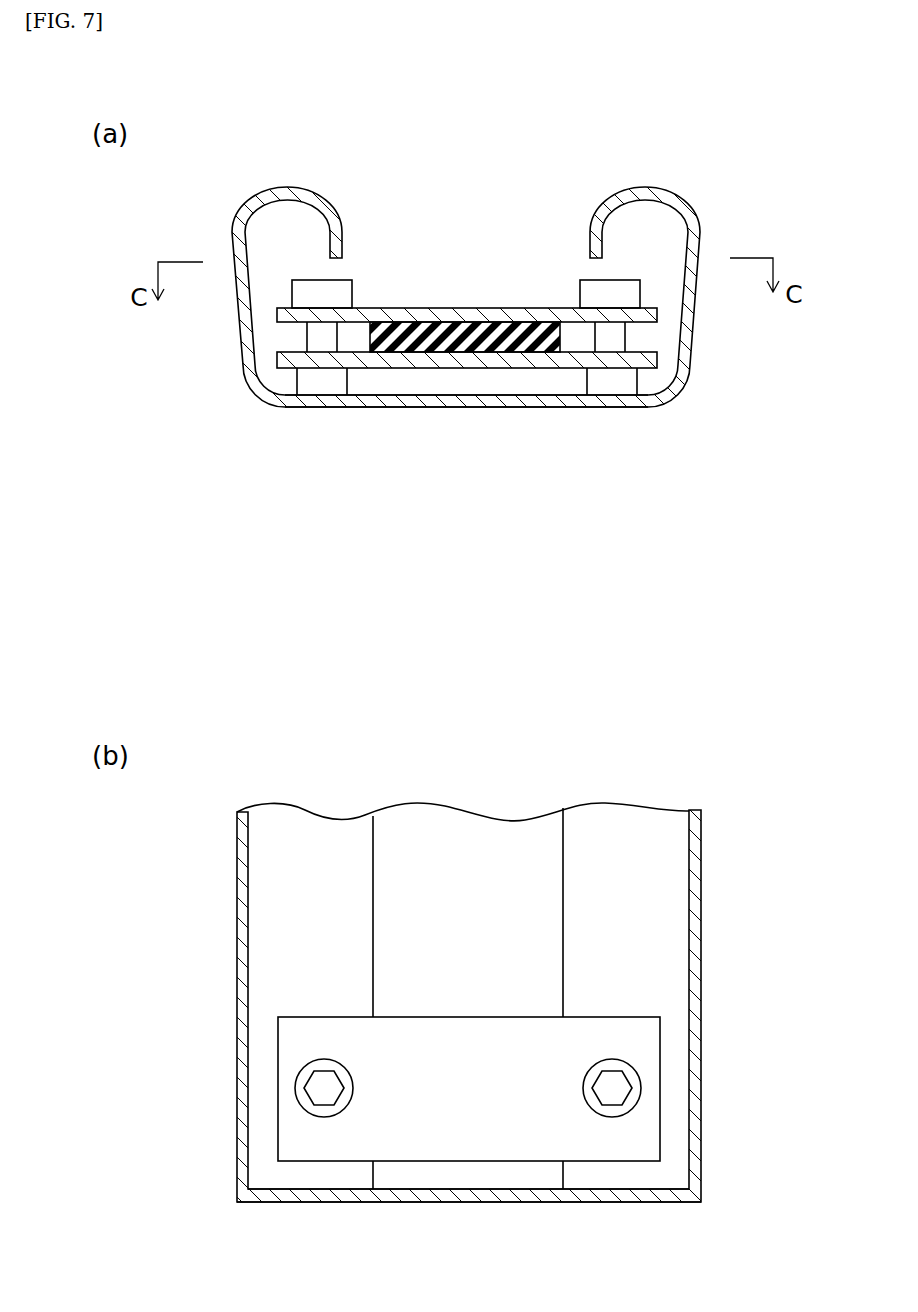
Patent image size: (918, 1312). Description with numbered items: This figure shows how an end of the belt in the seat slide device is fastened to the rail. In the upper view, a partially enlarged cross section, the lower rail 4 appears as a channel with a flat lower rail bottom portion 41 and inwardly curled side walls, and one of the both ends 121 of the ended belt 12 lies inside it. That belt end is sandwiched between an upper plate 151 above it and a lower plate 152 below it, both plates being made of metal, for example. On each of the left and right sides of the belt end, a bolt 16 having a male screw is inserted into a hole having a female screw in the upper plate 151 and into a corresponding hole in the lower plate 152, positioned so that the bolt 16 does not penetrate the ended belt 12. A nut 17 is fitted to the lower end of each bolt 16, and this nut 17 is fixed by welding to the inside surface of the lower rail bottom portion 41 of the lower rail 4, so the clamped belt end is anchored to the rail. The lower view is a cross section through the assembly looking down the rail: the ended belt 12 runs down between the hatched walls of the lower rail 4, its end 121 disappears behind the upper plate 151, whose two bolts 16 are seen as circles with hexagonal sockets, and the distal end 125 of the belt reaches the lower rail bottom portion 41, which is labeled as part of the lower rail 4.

The lower rail 4 is at (695, 224).
The lower rail bottom portion 41 is at (465, 400).
The ended belt 12 is at (465, 335).
The both ends of the ended belt 121 is at (548, 943).
The distal end 125 is at (468, 1192).
The upper plate 151 is at (290, 316).
The lower plate 152 is at (290, 360).
The bolt 16 is at (611, 337).
The nut 17 is at (622, 378).